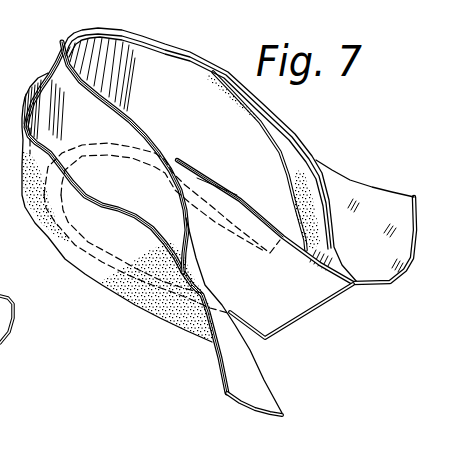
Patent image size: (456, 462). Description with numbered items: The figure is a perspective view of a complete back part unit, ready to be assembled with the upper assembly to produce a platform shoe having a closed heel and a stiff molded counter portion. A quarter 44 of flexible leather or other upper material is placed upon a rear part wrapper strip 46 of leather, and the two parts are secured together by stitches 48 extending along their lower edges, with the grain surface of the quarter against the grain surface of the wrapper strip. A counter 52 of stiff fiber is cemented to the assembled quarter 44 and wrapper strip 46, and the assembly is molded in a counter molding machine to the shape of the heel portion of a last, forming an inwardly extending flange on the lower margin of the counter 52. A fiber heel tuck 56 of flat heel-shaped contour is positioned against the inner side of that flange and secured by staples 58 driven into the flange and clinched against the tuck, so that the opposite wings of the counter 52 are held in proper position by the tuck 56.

The quarter 44 is at (60, 73).
The rear part wrapper strip 46 is at (372, 198).
The stitches 48 is at (330, 220).
The counter 52 is at (161, 60).
The fiber heel tuck 56 is at (299, 297).
The staples 58 is at (262, 232).